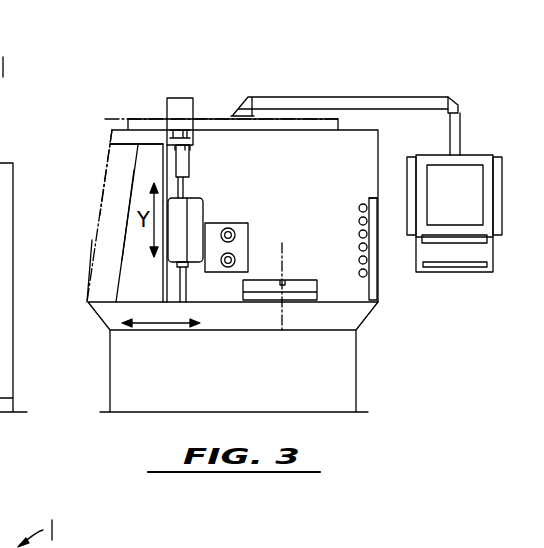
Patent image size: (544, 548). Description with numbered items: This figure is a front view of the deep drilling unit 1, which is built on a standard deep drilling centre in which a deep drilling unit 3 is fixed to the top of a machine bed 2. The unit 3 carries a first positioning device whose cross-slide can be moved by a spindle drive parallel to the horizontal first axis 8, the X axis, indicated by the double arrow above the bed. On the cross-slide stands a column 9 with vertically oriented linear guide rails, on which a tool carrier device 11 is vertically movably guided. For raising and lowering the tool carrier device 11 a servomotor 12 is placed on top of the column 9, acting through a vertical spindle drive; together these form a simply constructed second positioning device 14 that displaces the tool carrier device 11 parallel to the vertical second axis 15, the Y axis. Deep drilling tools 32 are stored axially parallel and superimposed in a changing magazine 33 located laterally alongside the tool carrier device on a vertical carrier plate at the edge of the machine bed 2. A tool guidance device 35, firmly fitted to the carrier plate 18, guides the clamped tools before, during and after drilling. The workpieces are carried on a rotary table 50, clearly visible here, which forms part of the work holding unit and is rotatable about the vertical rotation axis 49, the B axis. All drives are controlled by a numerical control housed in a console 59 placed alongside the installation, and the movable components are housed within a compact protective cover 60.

The deep drilling unit 1 is at (361, 96).
The machine bed 2 is at (366, 326).
The deep drilling unit 3 is at (142, 106).
The first axis 8 is at (154, 304).
The column 9 is at (140, 184).
The tool carrier device 11 is at (213, 209).
The servomotor 12 is at (186, 103).
The second positioning device 14 is at (153, 165).
The second axis 15 is at (152, 235).
The carrier plate 18 is at (193, 263).
The deep drilling tool 32 is at (358, 247).
The changing magazine 33 is at (373, 200).
The tool guidance device 35 is at (248, 233).
The vertical rotation axis 49 is at (279, 326).
The rotary table 50 is at (295, 278).
The console 59 is at (470, 210).
The protective cover 60 is at (92, 283).